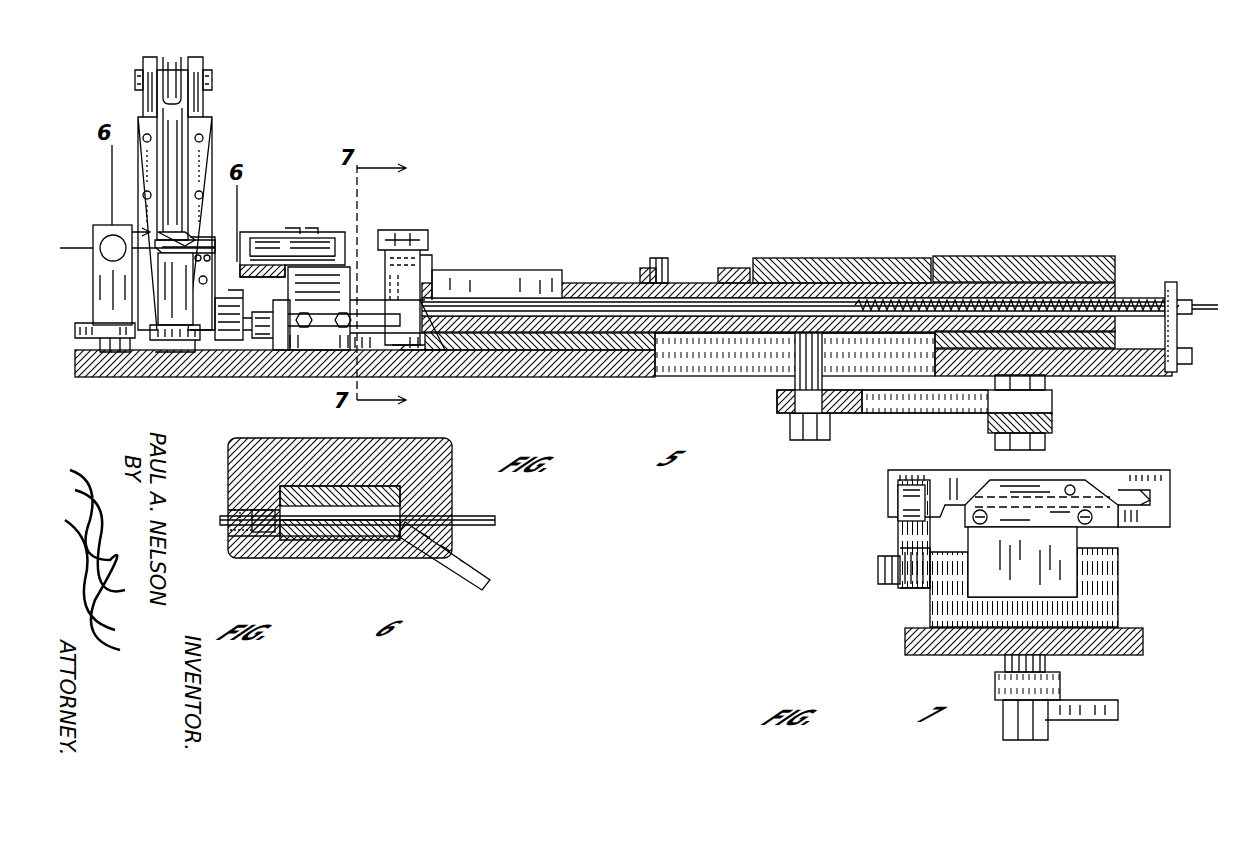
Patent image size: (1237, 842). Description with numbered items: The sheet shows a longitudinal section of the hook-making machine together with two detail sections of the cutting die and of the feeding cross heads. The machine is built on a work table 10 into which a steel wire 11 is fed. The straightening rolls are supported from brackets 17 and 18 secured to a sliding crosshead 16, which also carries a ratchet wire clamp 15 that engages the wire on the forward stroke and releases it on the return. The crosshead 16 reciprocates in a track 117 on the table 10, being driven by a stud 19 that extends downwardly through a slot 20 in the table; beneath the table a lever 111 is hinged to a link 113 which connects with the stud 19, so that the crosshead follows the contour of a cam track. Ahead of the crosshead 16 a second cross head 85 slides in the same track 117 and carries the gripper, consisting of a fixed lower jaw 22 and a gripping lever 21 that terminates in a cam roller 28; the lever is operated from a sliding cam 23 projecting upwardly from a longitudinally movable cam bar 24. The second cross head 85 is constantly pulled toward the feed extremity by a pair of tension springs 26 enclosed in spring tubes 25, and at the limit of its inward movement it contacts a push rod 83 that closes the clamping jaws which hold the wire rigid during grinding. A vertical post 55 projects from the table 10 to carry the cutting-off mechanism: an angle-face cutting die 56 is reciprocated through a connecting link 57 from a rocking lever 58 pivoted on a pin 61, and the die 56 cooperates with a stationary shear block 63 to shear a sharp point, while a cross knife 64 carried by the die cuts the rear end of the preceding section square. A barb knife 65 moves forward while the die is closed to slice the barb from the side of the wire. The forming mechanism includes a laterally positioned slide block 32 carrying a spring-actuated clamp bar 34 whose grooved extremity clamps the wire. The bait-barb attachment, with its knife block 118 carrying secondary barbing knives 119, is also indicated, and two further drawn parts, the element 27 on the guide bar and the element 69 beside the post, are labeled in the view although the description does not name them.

In FIG. 5, the work table 10 is at (102, 375).
In FIG. 7, the work table 10 is at (920, 645).
In FIG. 6, the steel wire 11 is at (480, 518).
In FIG. 7, the steel wire 11 is at (1160, 496).
In FIG. 5, the ratchet wire clamp 15 is at (660, 265).
In FIG. 5, the sliding crosshead 16 is at (688, 285).
In FIG. 5, the bracket 17 is at (1040, 258).
In FIG. 5, the bracket 18 is at (862, 258).
In FIG. 5, the stud 19 is at (805, 383).
In FIG. 7, the stud 19 is at (1005, 661).
In FIG. 5, the slot 20 is at (745, 360).
In FIG. 5, the gripping lever 21 is at (402, 236).
In FIG. 7, the gripping lever 21 is at (1120, 478).
In FIG. 5, the fixed lower jaw 22 is at (423, 258).
In FIG. 7, the fixed lower jaw 22 is at (1128, 522).
In FIG. 5, the sliding cam 23 is at (527, 274).
In FIG. 7, the sliding cam 23 is at (905, 535).
In FIG. 7, the cam bar 24 is at (915, 585).
In FIG. 5, the spring tube 25 is at (587, 299).
In FIG. 5, the tension spring 26 is at (1122, 300).
In FIG. 5, the stop block 27 is at (735, 270).
In FIG. 7, the cam roller 28 is at (912, 494).
In FIG. 5, the slide block 32 is at (90, 327).
In FIG. 5, the clamp bar 34 is at (102, 240).
In FIG. 5, the vertical post 55 is at (200, 132).
In FIG. 6, the vertical post 55 is at (440, 455).
In FIG. 5, the cutting die 56 is at (195, 236).
In FIG. 6, the cutting die 56 is at (335, 540).
In FIG. 5, the connecting link 57 is at (173, 122).
In FIG. 5, the rocking lever 58 is at (172, 58).
In FIG. 5, the pin 61 is at (207, 82).
In FIG. 6, the shear block 63 is at (318, 505).
In FIG. 5, the cross knife 64 is at (158, 242).
In FIG. 6, the cross knife 64 is at (250, 528).
In FIG. 6, the barb knife 65 is at (478, 562).
In FIG. 5, the slide block 69 is at (160, 280).
In FIG. 5, the push rod 83 is at (270, 352).
In FIG. 7, the second cross head 85 is at (1065, 570).
In FIG. 5, the lever 111 is at (1052, 424).
In FIG. 7, the lever 111 is at (1100, 705).
In FIG. 5, the link 113 is at (908, 400).
In FIG. 7, the link 113 is at (1055, 684).
In FIG. 7, the track 117 is at (1100, 597).
In FIG. 5, the knife block 118 is at (345, 245).
In FIG. 5, the secondary barbing knife 119 is at (285, 241).